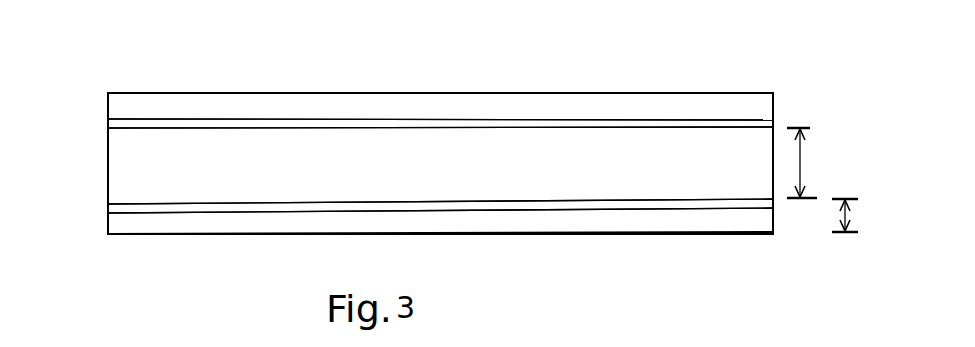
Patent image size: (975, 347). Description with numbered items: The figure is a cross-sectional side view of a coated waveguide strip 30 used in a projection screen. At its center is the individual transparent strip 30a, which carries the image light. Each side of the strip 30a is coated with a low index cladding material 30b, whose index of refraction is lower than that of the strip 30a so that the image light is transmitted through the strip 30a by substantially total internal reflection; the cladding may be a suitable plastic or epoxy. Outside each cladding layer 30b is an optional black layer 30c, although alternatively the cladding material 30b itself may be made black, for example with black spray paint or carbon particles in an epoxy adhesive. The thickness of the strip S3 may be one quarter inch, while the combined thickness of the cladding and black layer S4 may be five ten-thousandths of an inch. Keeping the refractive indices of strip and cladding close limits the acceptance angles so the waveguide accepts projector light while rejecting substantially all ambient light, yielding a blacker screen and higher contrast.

The coated waveguide strip 30 is at (628, 70).
The strip 30a is at (108, 158).
The low index cladding material 30b is at (108, 122).
The black layer 30c is at (108, 104).
The thickness of the strip S3 is at (800, 160).
The combined thickness of the cladding and black layer S4 is at (850, 214).